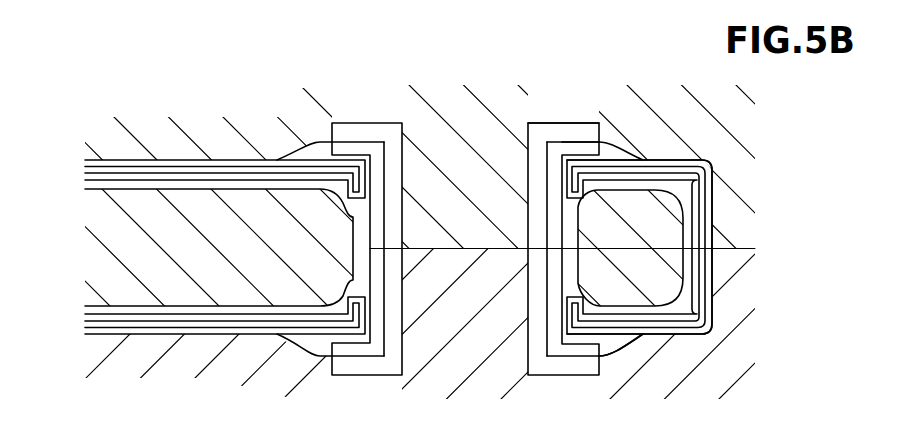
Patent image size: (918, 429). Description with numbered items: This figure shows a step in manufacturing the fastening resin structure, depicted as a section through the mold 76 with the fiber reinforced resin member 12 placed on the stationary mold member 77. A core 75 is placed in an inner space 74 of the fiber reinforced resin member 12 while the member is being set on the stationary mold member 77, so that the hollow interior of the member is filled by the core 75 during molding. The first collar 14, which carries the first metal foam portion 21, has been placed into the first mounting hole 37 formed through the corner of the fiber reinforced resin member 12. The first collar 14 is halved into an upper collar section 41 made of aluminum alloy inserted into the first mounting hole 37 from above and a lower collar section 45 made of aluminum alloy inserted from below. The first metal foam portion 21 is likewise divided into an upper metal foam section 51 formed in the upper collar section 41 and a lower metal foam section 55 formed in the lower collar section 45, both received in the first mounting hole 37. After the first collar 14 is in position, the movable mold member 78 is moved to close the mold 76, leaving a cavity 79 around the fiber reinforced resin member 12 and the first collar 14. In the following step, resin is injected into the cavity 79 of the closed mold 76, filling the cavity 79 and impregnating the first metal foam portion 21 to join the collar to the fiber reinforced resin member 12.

The fiber reinforced resin member 12 is at (218, 159).
The first collar 14 is at (563, 118).
The first metal foam portion 21 is at (588, 131).
The first mounting hole 37 is at (363, 182).
The upper collar section 41 is at (528, 179).
The lower collar section 45 is at (528, 309).
The upper metal foam section 51 is at (378, 211).
The lower metal foam section 55 is at (378, 302).
The inner space 74 is at (201, 262).
The core 75 is at (208, 277).
The mold 76 is at (788, 177).
The stationary mold member 77 is at (733, 324).
The movable mold member 78 is at (733, 178).
The cavity 79 is at (622, 348).